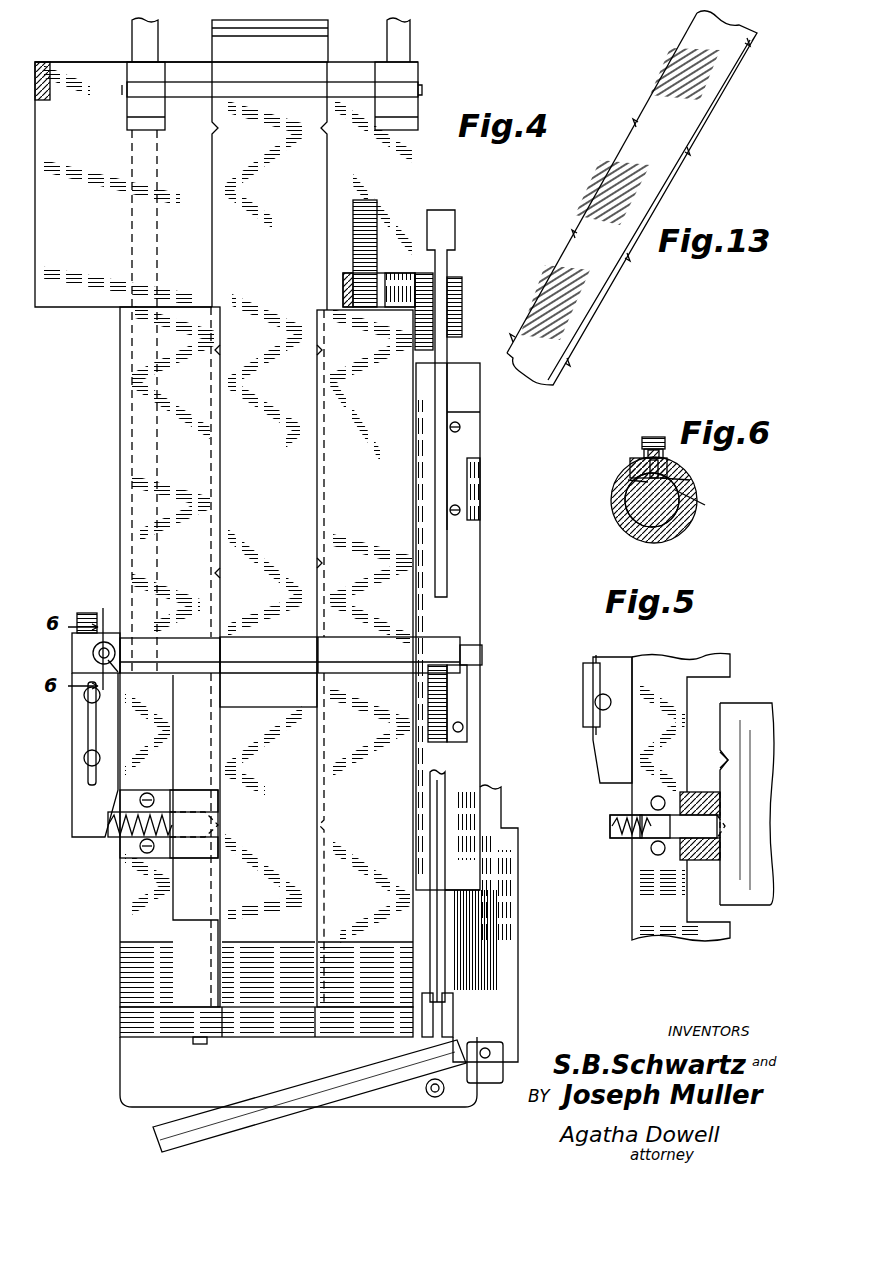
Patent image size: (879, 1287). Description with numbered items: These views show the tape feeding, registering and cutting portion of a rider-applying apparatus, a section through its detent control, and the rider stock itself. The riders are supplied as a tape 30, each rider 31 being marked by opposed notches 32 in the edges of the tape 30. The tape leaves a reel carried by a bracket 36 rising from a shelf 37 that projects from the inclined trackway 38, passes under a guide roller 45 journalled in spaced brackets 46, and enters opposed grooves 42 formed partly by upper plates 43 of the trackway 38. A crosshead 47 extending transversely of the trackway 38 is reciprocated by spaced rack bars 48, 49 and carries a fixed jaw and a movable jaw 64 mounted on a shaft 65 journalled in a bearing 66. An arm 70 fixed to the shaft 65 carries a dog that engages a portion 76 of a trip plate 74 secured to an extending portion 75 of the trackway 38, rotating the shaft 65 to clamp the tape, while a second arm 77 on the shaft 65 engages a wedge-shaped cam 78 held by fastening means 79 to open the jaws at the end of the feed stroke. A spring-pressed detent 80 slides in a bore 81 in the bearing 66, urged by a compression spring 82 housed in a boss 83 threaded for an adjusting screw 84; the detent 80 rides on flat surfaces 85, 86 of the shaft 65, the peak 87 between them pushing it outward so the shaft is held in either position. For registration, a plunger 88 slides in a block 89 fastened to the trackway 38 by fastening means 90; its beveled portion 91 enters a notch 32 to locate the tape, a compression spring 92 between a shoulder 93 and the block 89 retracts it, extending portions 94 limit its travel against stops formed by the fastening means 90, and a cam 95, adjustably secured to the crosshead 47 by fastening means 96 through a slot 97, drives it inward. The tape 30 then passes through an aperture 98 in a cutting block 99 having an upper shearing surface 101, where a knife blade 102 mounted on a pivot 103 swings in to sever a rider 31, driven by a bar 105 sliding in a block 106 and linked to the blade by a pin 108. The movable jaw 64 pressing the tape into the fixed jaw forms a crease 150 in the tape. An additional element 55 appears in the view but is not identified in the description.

In FIG. 13, the tape 30 is at (688, 190).
In FIG. 5, the tape 30 is at (765, 712).
In FIG. 4, the rider 31 is at (214, 230).
In FIG. 13, the rider 31 is at (658, 84).
In FIG. 4, the notches 32 is at (212, 132).
In FIG. 13, the notches 32 is at (745, 48).
In FIG. 5, the notches 32 is at (722, 758).
In FIG. 4, the bracket 36 is at (45, 62).
In FIG. 4, the shelf 37 is at (85, 300).
In FIG. 4, the trackway 38 is at (114, 395).
In FIG. 5, the trackway 38 is at (624, 887).
In FIG. 4, the grooves 42 is at (213, 322).
In FIG. 4, the upper plates 43 is at (285, 658).
In FIG. 4, the guide roller 45 is at (270, 80).
In FIG. 4, the brackets 46 is at (137, 68).
In FIG. 4, the crosshead 47 is at (82, 613).
In FIG. 4, the rack bar 48 is at (158, 34).
In FIG. 4, the rack bar 49 is at (387, 33).
In FIG. 4, the rack 55 is at (365, 200).
In FIG. 4, the movable jaw 64 is at (270, 706).
In FIG. 4, the shaft 65 is at (185, 672).
In FIG. 6, the shaft 65 is at (630, 504).
In FIG. 4, the bearing 66 is at (88, 648).
In FIG. 6, the bearing 66 is at (690, 526).
In FIG. 4, the arm 70 is at (472, 652).
In FIG. 4, the trip plate 74 is at (480, 482).
In FIG. 4, the extending portion 75 is at (478, 590).
In FIG. 4, the portion of trip plate 76 is at (480, 438).
In FIG. 4, the arm 77 is at (428, 688).
In FIG. 4, the cam 78 is at (452, 698).
In FIG. 4, the screw threaded fastening means 79 is at (464, 727).
In FIG. 6, the detent 80 is at (672, 465).
In FIG. 6, the bore 81 is at (650, 468).
In FIG. 6, the compression spring 82 is at (648, 452).
In FIG. 4, the boss 83 is at (118, 670).
In FIG. 6, the boss 83 is at (644, 450).
In FIG. 4, the adjusting screw 84 is at (108, 646).
In FIG. 6, the adjusting screw 84 is at (668, 415).
In FIG. 6, the flat surface 85 is at (700, 504).
In FIG. 6, the flat surface 86 is at (640, 481).
In FIG. 6, the peak 87 is at (692, 482).
In FIG. 4, the plunger 88 is at (122, 840).
In FIG. 5, the plunger 88 is at (622, 836).
In FIG. 4, the block 89 is at (196, 860).
In FIG. 5, the block 89 is at (706, 860).
In FIG. 4, the screw threaded fastening means 90 is at (150, 792).
In FIG. 5, the screw threaded fastening means 90 is at (650, 802).
In FIG. 4, the beveled portion 91 is at (218, 825).
In FIG. 5, the beveled portion 91 is at (716, 826).
In FIG. 4, the compression spring 92 is at (166, 840).
In FIG. 5, the compression spring 92 is at (628, 820).
In FIG. 4, the shoulder 93 is at (112, 832).
In FIG. 5, the shoulder 93 is at (612, 826).
In FIG. 4, the extending portions 94 is at (170, 804).
In FIG. 5, the extending portions 94 is at (682, 800).
In FIG. 4, the cam 95 is at (90, 796).
In FIG. 5, the cam 95 is at (604, 762).
In FIG. 4, the screw threaded fastening means 96 is at (84, 756).
In FIG. 5, the screw threaded fastening means 96 is at (594, 700).
In FIG. 4, the slot 97 is at (88, 720).
In FIG. 5, the slot 97 is at (630, 660).
In FIG. 4, the aperture 98 is at (198, 1045).
In FIG. 4, the cutting block 99 is at (128, 1022).
In FIG. 4, the upper shearing surface 101 is at (120, 1068).
In FIG. 4, the knife blade 102 is at (268, 1118).
In FIG. 4, the pivot 103 is at (432, 1098).
In FIG. 4, the bar 105 is at (500, 806).
In FIG. 4, the block 106 is at (515, 920).
In FIG. 4, the pin 108 is at (487, 1048).
In FIG. 4, the crease 150 is at (280, 955).